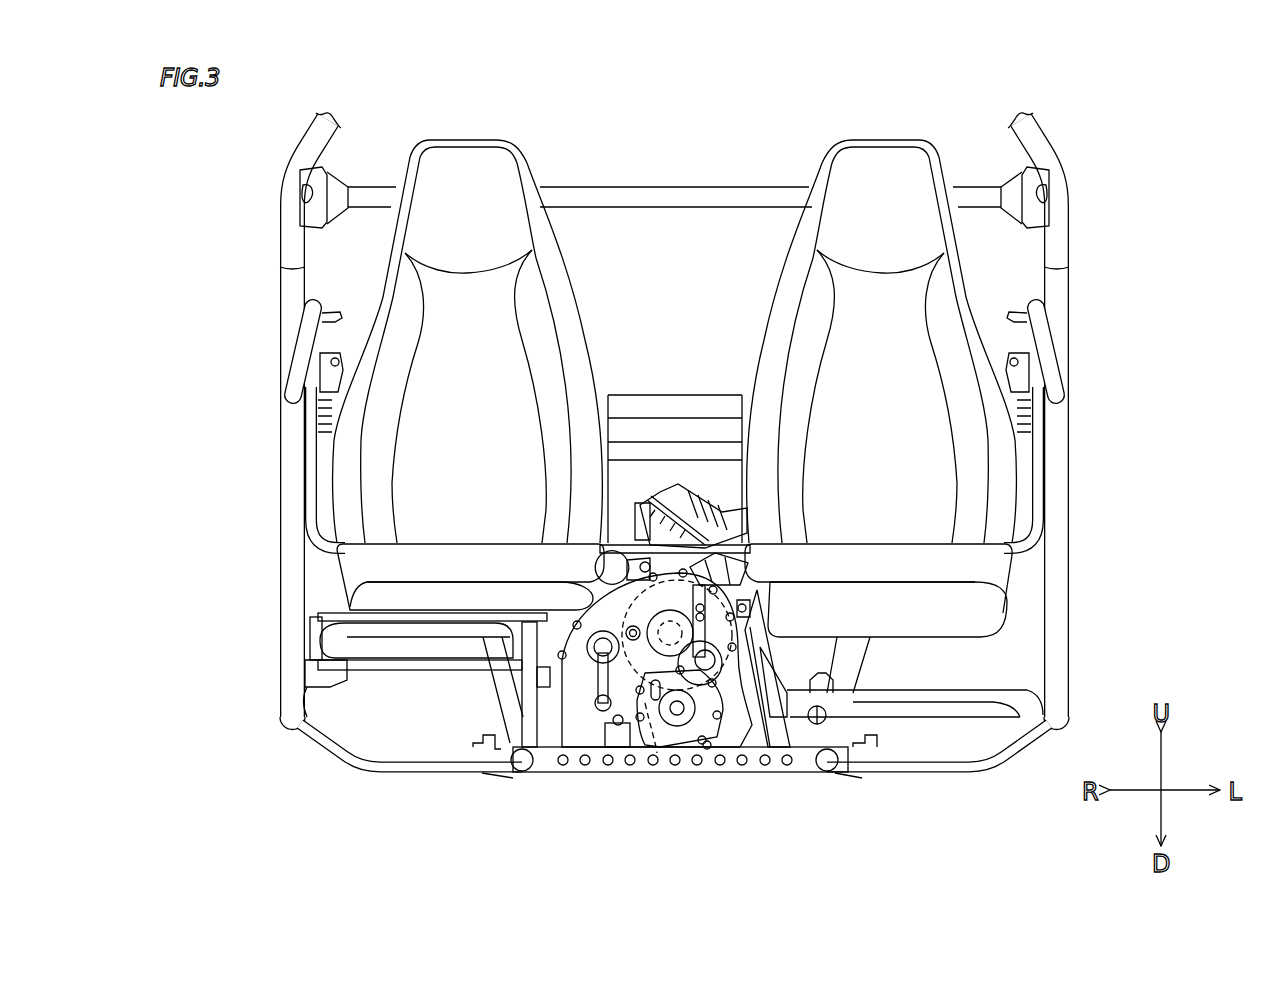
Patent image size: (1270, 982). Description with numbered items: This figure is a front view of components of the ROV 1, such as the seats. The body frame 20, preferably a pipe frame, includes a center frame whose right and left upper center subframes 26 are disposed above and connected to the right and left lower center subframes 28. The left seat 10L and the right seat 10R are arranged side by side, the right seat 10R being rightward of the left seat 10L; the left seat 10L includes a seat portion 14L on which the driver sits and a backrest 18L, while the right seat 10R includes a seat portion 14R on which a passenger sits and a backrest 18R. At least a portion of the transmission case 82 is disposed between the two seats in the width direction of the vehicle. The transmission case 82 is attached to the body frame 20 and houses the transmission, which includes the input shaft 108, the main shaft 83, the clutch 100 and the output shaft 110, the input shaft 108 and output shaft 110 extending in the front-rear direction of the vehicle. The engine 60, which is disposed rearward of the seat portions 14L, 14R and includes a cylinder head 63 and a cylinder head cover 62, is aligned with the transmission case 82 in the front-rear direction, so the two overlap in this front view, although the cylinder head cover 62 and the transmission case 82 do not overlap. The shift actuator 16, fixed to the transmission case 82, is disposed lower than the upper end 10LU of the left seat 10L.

The ROV 1 is at (1141, 292).
The right seat 10R is at (404, 157).
The left seat 10L is at (948, 160).
The upper end of the left seat 10LU is at (880, 141).
The seat portion 14R is at (437, 567).
The seat portion 14L is at (945, 558).
The shift actuator 16 is at (583, 665).
The backrest 18R is at (463, 347).
The backrest 18L is at (907, 358).
The body frame 20 is at (1074, 260).
The upper center subframes 26 is at (288, 210).
The lower center subframes 28 is at (290, 613).
The engine 60 is at (658, 485).
The cylinder head cover 62 is at (760, 505).
The cylinder head 63 is at (625, 508).
The transmission case 82 is at (783, 762).
The main shaft 83 is at (692, 738).
The clutch 100 is at (707, 745).
The input shaft 108 is at (625, 675).
The output shaft 110 is at (676, 712).